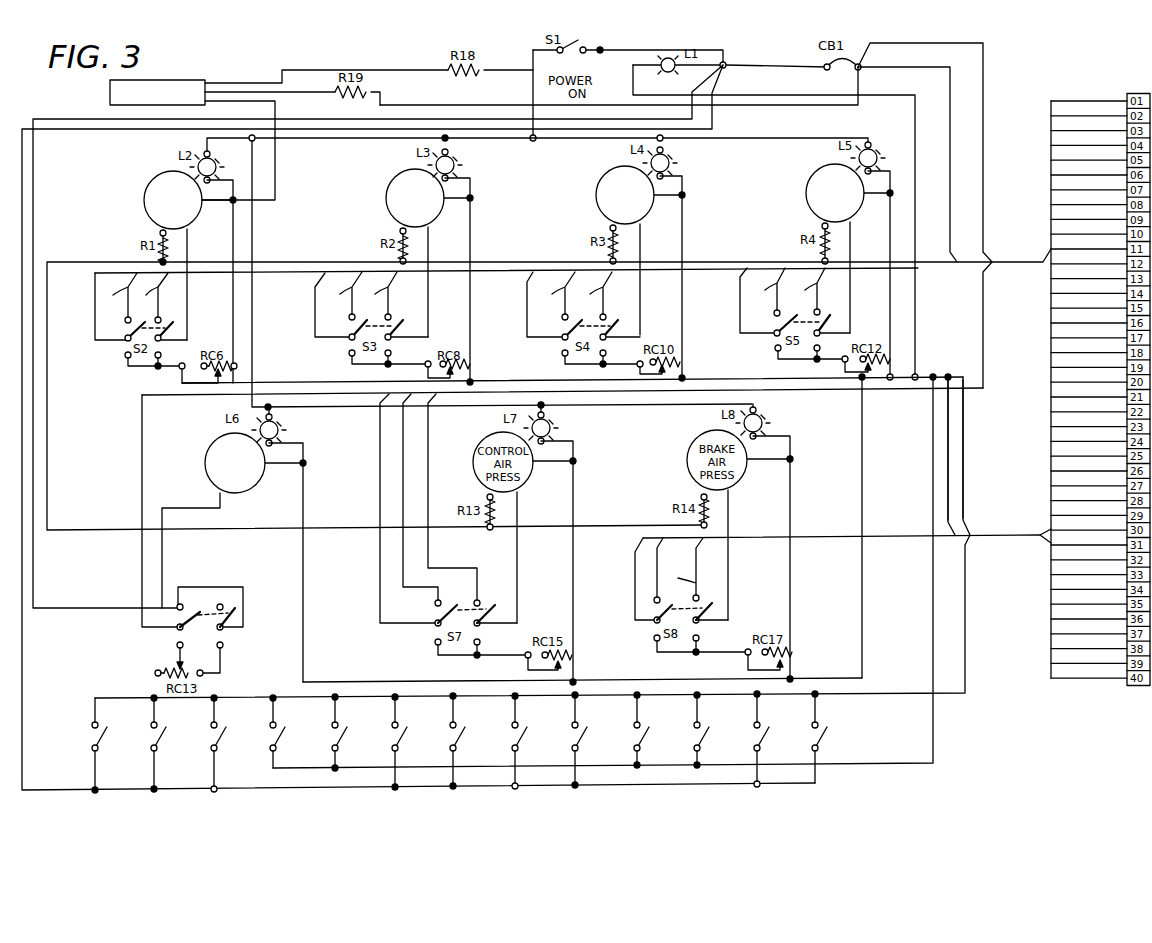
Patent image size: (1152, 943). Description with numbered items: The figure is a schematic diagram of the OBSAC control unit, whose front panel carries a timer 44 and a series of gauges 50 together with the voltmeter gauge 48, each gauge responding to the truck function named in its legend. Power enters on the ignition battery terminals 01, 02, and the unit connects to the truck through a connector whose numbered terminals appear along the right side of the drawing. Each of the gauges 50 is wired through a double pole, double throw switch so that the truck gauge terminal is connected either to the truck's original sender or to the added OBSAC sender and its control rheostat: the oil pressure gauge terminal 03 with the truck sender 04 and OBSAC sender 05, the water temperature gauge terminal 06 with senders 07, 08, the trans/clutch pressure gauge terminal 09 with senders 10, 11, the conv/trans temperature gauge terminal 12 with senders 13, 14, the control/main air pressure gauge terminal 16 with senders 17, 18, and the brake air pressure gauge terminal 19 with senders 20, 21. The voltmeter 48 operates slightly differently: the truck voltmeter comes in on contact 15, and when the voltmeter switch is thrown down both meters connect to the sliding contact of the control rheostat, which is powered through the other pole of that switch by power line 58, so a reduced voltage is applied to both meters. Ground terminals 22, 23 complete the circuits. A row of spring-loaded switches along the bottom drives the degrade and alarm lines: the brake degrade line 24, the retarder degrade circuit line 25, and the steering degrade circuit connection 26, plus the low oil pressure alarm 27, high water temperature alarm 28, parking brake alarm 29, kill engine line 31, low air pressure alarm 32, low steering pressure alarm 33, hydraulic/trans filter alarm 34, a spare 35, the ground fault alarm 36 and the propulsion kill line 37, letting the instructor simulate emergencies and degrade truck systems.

The timer 44 is at (201, 80).
The gauges 50 is at (145, 188).
The voltmeter gauge 48 is at (205, 457).
The power line 58 is at (228, 630).
The voltmeter contact 15 is at (143, 573).
The control/main air pressure gauge terminal 16 is at (380, 576).
The control/main air pressure sender (truck) terminal 17 is at (403, 550).
The control/main air pressure sender (OBSAC) terminal 18 is at (430, 546).
The brake air pressure gauge terminal 19 is at (635, 588).
The brake air pressure sender (truck) terminal 20 is at (650, 570).
The brake air pressure sender (OBSAC) terminal 21 is at (686, 569).
The ground terminal 22 is at (949, 420).
The ground terminal 23 is at (964, 465).
The brake degrade line 24 is at (94, 716).
The retarder degrade circuit line 25 is at (153, 715).
The steering degrade circuit connection 26 is at (213, 715).
The low oil pressure alarm terminal 27 is at (272, 715).
The high water temperature alarm terminal 28 is at (334, 715).
The parking brake alarm terminal 29 is at (394, 715).
The kill engine terminal 31 is at (452, 715).
The low air pressure alarm terminal 32 is at (514, 715).
The low steering pressure alarm terminal 33 is at (574, 715).
The hydraulic/trans filter alarm terminal 34 is at (636, 715).
The spare terminal 35 is at (696, 715).
The ground fault alarm terminal 36 is at (756, 715).
The propulsion kill terminal 37 is at (814, 715).
The ignition battery terminal 01 is at (880, 68).
The ignition battery terminal 02 is at (942, 50).
The oil pressure gauge terminal 03 is at (95, 332).
The oil pressure sender (truck) terminal 04 is at (120, 298).
The oil pressure sender (OBSAC) terminal 05 is at (151, 298).
The water temperature gauge terminal 06 is at (315, 318).
The water temperature sender (truck) terminal 07 is at (343, 296).
The water temperature sender (OBSAC) terminal 08 is at (379, 296).
The trans/clutch pressure gauge terminal 09 is at (527, 316).
The trans/clutch pressure sender (truck) terminal 10 is at (558, 296).
The trans/clutch pressure sender (OBSAC) terminal 11 is at (598, 296).
The conv/trans temperature gauge terminal 12 is at (740, 314).
The conv/trans temperature sender (truck) terminal 13 is at (770, 292).
The conv/trans temperature sender (OBSAC) terminal 14 is at (811, 291).